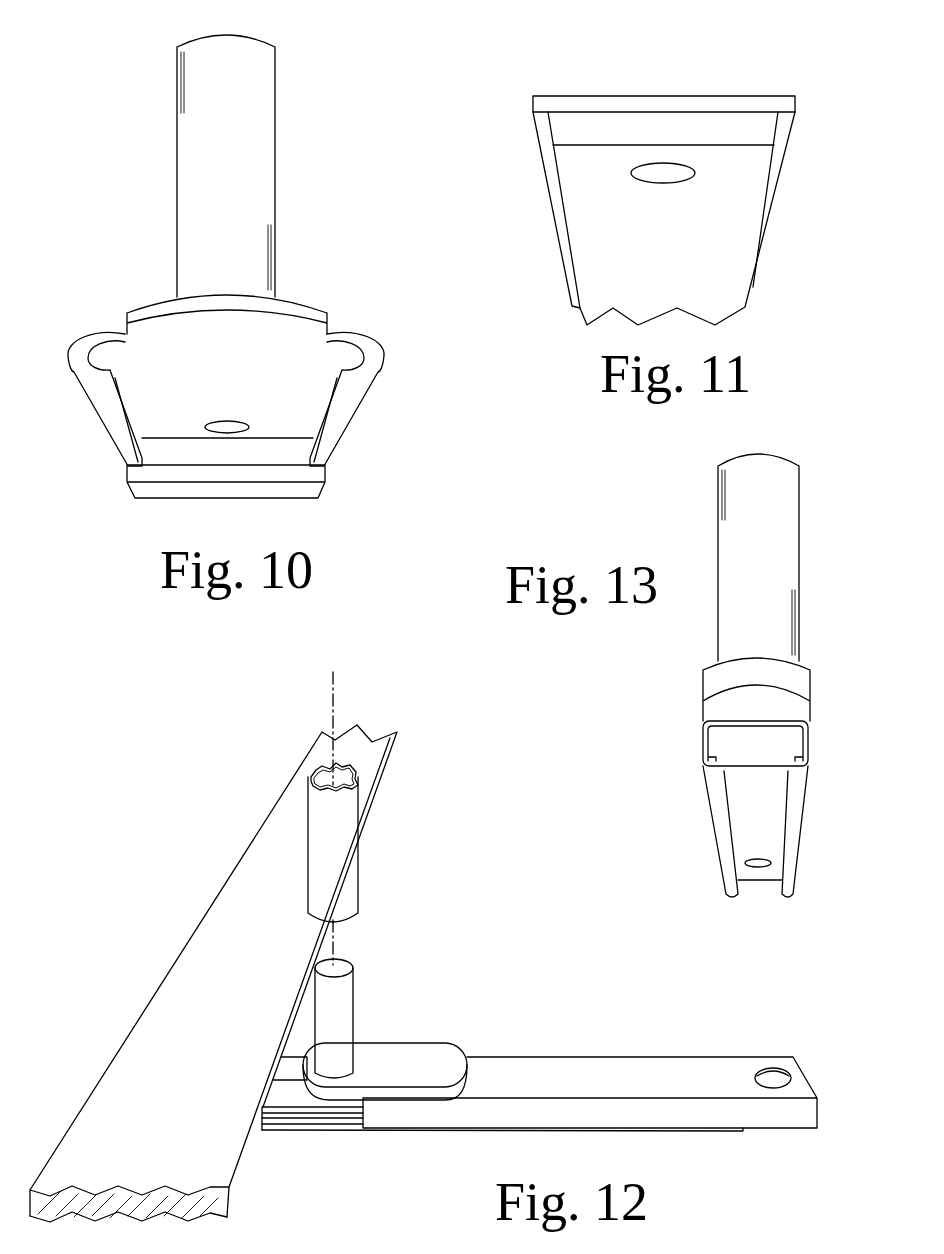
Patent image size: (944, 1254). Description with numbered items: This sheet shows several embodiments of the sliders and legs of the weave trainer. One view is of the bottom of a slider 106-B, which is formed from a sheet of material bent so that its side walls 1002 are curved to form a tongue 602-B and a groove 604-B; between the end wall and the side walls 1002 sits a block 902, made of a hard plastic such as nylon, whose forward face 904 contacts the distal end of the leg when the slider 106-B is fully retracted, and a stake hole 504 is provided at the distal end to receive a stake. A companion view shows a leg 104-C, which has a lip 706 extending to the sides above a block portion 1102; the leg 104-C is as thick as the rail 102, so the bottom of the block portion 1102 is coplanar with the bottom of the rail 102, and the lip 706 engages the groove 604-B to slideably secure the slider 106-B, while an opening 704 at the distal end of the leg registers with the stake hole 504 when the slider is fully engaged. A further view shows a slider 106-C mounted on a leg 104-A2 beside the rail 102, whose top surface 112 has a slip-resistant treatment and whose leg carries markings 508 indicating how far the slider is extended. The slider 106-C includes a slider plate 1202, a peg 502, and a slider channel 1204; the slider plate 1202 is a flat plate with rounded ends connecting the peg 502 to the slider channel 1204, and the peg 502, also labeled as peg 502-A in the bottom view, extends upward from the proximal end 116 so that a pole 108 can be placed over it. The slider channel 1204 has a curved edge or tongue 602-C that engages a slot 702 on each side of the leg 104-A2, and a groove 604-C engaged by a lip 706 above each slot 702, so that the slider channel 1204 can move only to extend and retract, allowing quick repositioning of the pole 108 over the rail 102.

In FIG. 12, the rail 102 is at (200, 920).
In FIG. 12, the leg 104-A2 is at (273, 1132).
In FIG. 11, the leg 104-C is at (795, 82).
In FIG. 10, the slider 106-B is at (120, 455).
In FIG. 13, the slider 106-C is at (820, 625).
In FIG. 12, the slider 106-C is at (597, 1055).
In FIG. 12, the pole 108 is at (358, 888).
In FIG. 12, the top surface 112 is at (290, 926).
In FIG. 12, the proximal end 116 is at (310, 1050).
In FIG. 12, the peg 502 is at (353, 983).
In FIG. 10, the peg 502-A is at (175, 172).
In FIG. 13, the peg 502-A is at (718, 490).
In FIG. 10, the stake hole 504 is at (250, 420).
In FIG. 12, the stake hole 504 is at (777, 1060).
In FIG. 12, the markings 508 is at (283, 1080).
In FIG. 10, the tongue 602-B is at (128, 408).
In FIG. 13, the tongue 602-C is at (793, 752).
In FIG. 10, the groove 604-B is at (110, 358).
In FIG. 13, the groove 604-C is at (717, 743).
In FIG. 12, the slot 702 is at (347, 1118).
In FIG. 11, the opening 704 is at (650, 183).
In FIG. 11, the lip 706 is at (533, 105).
In FIG. 12, the lip 706 is at (262, 1110).
In FIG. 10, the block 902 is at (325, 480).
In FIG. 10, the forward face 904 is at (232, 474).
In FIG. 10, the side walls 1002 is at (370, 333).
In FIG. 11, the block portion 1102 is at (748, 297).
In FIG. 13, the slider plate 1202 is at (704, 683).
In FIG. 12, the slider plate 1202 is at (433, 1043).
In FIG. 13, the slider channel 1204 is at (717, 860).
In FIG. 12, the slider channel 1204 is at (685, 1055).